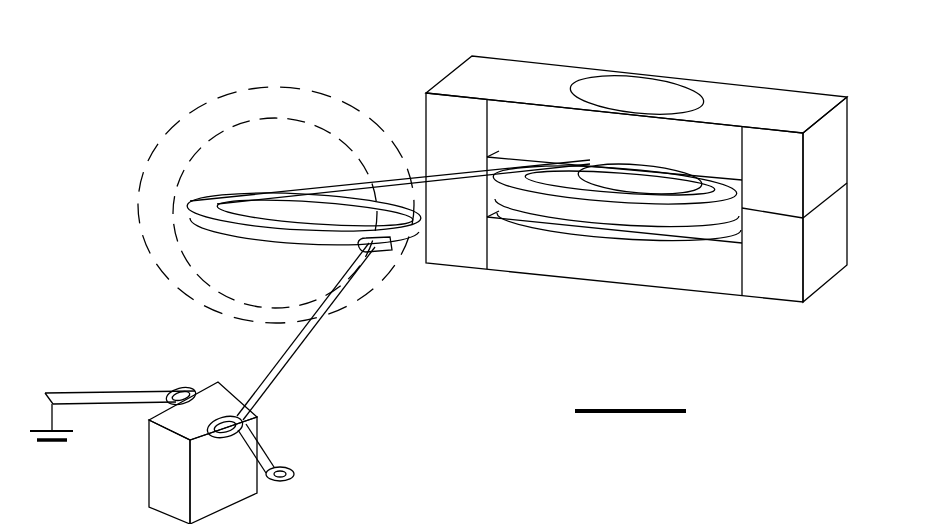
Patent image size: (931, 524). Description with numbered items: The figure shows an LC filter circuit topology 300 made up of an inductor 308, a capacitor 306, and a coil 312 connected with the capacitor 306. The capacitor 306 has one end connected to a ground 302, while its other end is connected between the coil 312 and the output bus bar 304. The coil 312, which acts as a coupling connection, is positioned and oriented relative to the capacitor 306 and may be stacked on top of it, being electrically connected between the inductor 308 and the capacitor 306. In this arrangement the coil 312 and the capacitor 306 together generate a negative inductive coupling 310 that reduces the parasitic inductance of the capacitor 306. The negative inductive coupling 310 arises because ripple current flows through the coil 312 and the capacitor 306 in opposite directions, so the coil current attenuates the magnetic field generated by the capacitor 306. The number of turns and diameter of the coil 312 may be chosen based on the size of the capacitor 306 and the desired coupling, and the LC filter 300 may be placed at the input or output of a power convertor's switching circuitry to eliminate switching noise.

The LC filter circuit topology 300 is at (177, 33).
The ground 302 is at (52, 450).
The output bus bar 304 is at (294, 459).
The capacitor 306 is at (148, 470).
The inductor 308 is at (752, 100).
The negative inductive coupling 310 is at (280, 88).
The coil 312 is at (291, 252).